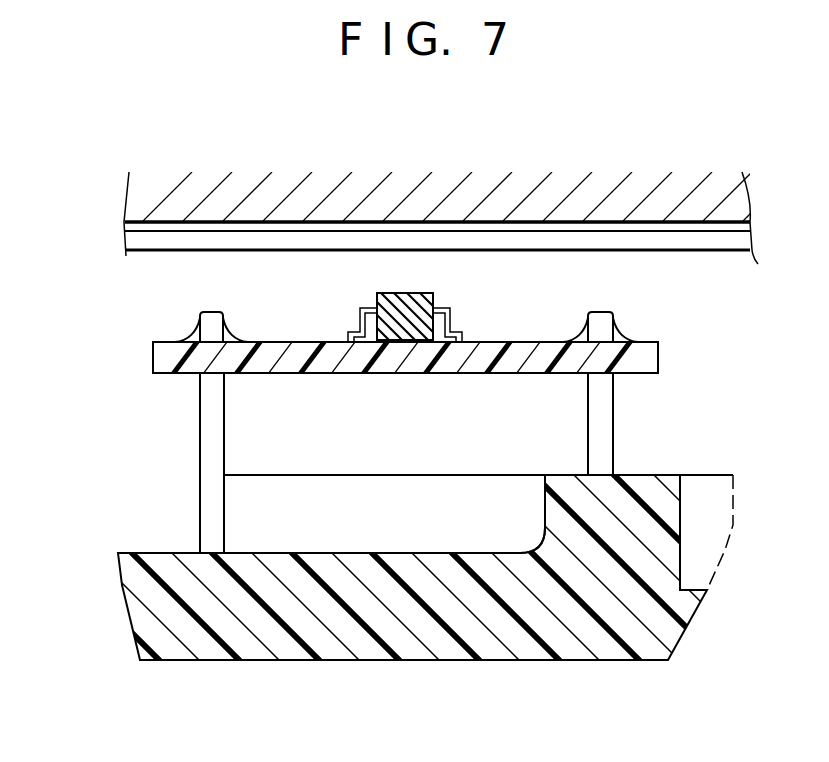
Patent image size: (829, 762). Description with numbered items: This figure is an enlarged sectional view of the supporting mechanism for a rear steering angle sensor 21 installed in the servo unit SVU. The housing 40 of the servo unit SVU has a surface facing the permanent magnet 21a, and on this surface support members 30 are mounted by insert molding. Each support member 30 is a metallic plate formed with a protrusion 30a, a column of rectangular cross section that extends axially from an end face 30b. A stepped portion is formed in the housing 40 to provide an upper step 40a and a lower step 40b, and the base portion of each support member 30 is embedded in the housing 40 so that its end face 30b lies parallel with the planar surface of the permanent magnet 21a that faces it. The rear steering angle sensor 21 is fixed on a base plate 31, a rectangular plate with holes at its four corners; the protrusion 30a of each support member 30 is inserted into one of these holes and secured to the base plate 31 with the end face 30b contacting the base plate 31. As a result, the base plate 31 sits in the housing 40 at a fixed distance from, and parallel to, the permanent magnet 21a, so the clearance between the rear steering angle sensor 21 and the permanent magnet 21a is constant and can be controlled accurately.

The rear steering angle sensor 21 is at (410, 313).
The permanent magnet 21a is at (625, 205).
The support member 30 is at (197, 423).
The protrusion 30a is at (207, 316).
The end face 30b is at (198, 369).
The base plate 31 is at (635, 362).
The housing 40 is at (660, 490).
The upper step 40a is at (565, 475).
The lower step 40b is at (158, 565).
The servo unit SVU is at (535, 663).